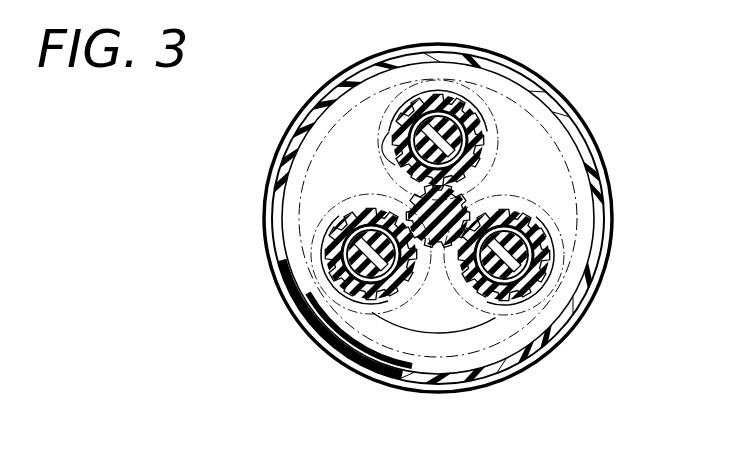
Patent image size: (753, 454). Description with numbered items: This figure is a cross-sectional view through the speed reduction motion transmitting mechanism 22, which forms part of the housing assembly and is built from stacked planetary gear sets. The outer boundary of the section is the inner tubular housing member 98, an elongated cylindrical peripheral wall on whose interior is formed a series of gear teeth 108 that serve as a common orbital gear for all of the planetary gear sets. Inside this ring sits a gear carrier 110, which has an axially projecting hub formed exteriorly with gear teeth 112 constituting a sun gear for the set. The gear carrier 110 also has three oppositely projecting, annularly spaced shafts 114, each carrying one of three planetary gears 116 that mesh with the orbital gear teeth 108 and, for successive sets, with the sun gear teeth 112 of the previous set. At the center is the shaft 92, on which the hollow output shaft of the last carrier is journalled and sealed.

The speed reduction motion transmitting mechanism 22 is at (578, 97).
The inner tubular housing member 98 is at (566, 150).
The gear teeth 108 is at (452, 98).
The gear carrier 110 is at (395, 302).
The gear teeth 112 is at (462, 190).
The shafts 114 is at (392, 162).
The planetary gears 116 is at (392, 305).
The shaft 92 is at (466, 208).